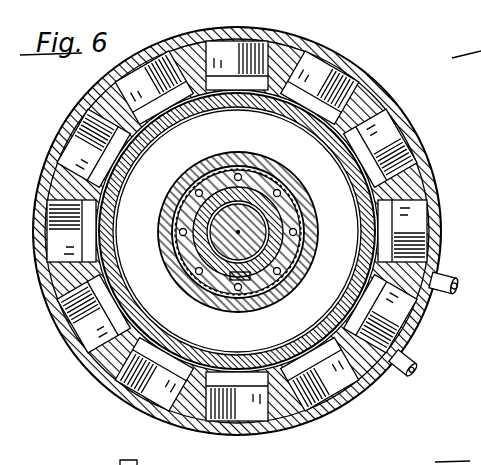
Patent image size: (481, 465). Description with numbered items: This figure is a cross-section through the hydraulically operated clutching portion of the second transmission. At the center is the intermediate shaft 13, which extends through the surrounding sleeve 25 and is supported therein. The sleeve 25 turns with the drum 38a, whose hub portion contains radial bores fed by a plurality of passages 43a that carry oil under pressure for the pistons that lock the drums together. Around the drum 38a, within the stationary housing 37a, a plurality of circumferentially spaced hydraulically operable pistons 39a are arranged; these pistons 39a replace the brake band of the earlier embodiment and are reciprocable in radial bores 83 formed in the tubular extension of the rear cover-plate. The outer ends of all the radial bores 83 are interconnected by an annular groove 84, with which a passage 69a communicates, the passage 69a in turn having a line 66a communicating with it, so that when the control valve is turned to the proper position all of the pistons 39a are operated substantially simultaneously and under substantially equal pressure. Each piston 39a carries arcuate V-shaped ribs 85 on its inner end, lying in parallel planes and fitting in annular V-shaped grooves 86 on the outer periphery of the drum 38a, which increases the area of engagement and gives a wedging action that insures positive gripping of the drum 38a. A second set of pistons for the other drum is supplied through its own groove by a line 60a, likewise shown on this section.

The intermediate shaft 13 is at (228, 249).
The sleeve 25 is at (262, 266).
The passages 43a is at (282, 268).
The housing 37a is at (326, 418).
The drum 38a is at (328, 85).
The pistons 39a is at (398, 137).
The radial bores 83 is at (362, 104).
The annular groove 84 is at (437, 173).
The V-shaped ribs 85 is at (366, 157).
The V-shaped grooves 86 is at (340, 124).
The passage 69a is at (457, 268).
The line 66a is at (444, 296).
The line 60a is at (398, 368).